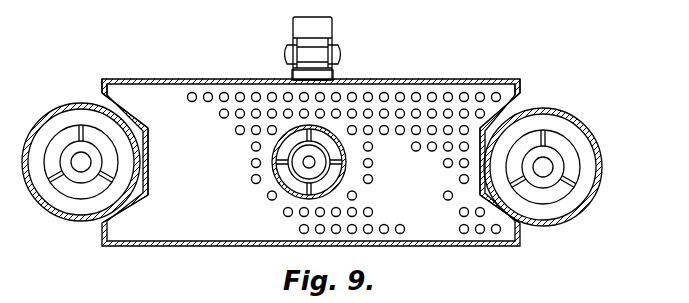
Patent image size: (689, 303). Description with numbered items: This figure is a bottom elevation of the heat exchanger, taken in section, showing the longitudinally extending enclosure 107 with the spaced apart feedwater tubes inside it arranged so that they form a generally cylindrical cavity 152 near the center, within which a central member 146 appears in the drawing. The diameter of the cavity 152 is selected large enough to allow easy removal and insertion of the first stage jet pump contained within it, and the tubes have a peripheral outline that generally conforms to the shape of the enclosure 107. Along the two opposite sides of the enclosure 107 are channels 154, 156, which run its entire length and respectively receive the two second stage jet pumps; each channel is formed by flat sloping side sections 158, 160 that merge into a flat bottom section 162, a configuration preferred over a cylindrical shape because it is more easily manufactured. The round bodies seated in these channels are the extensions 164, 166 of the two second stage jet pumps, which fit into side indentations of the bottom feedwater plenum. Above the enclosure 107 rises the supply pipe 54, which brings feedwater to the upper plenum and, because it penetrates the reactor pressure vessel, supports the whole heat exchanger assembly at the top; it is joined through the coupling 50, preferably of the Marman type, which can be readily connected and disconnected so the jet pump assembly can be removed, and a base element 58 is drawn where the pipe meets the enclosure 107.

The coupling 50 is at (288, 49).
The supply pipe 54 is at (334, 28).
The base flange 58 is at (292, 75).
The enclosure 107 is at (474, 82).
The central hub 146 is at (318, 135).
The cavity 152 is at (350, 151).
The channel 154 is at (506, 114).
The channel 156 is at (100, 103).
The flat sloping side section 158 is at (127, 106).
The flat sloping side section 160 is at (130, 210).
The flat bottom section 162 is at (151, 166).
The extension 164 is at (604, 164).
The extension 166 is at (49, 212).